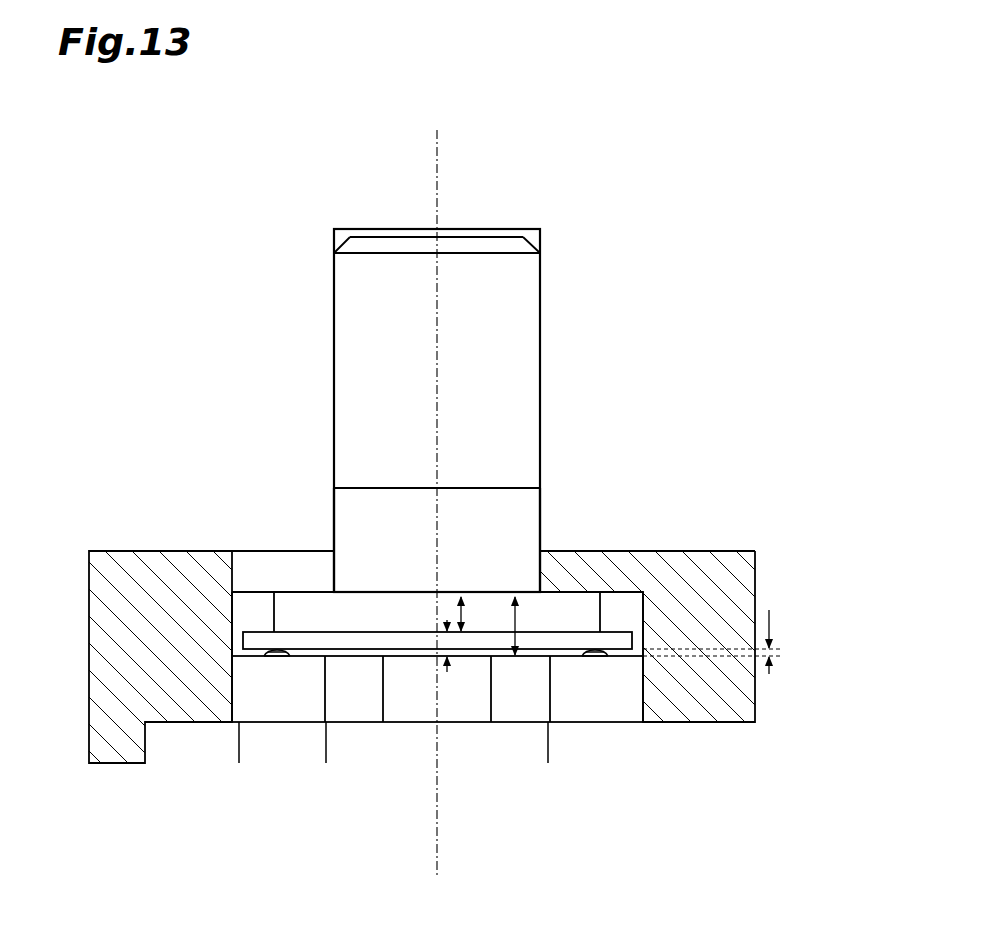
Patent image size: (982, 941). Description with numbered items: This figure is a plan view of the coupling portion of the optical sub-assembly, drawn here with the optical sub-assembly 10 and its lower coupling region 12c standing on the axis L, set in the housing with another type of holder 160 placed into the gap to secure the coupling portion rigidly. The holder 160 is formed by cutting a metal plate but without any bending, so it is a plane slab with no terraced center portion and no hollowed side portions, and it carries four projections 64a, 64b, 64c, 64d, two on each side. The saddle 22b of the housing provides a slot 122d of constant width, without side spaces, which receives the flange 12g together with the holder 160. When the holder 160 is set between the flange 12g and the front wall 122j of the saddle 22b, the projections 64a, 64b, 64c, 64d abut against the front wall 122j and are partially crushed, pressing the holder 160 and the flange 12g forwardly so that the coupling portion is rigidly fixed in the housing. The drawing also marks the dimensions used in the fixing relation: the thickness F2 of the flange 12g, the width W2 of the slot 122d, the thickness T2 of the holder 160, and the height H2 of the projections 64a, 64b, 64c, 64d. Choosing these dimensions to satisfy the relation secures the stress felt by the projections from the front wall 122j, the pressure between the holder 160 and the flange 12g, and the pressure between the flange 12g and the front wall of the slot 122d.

The lens barrel / optical unit 10 is at (503, 427).
The lower portion of lens barrel 12c is at (505, 530).
The flange 12g is at (589, 602).
The front wall 122j is at (195, 583).
The slot 122d is at (265, 597).
The holder 160 is at (318, 636).
The saddle 22b is at (622, 700).
The projection 64a is at (600, 657).
The projection 64b is at (267, 657).
The projection 64c is at (590, 657).
The projection 64d is at (290, 657).
The optical axis L is at (437, 190).
The thickness of the flange F2 is at (476, 614).
The width of the slot W2 is at (535, 626).
The thickness of the holder T2 is at (452, 660).
The height of the projections H2 is at (723, 642).